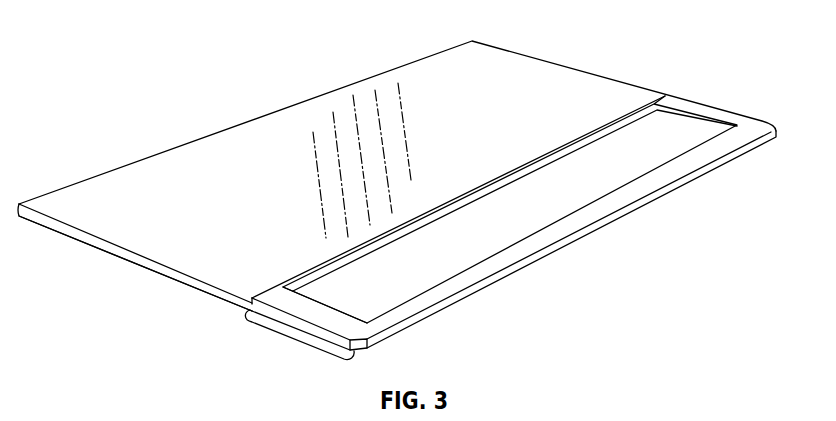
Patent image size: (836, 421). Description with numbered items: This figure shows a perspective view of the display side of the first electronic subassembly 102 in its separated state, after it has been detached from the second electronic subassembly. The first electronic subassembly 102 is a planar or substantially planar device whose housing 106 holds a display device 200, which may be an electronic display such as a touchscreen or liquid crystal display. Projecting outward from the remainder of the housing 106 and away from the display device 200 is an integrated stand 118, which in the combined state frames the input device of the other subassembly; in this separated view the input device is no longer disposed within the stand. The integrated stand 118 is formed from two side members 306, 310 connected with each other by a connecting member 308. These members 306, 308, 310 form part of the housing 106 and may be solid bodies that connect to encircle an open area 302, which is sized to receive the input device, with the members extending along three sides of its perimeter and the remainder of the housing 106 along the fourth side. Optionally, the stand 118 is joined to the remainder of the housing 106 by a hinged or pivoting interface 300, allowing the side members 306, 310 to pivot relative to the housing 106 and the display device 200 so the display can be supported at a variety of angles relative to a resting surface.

The first electronic subassembly 102 is at (136, 59).
The display device 200 is at (72, 197).
The housing 106 is at (77, 238).
The integrated stand 118 is at (290, 338).
The hinged or pivoting interface 300 is at (669, 81).
The open area 302 is at (534, 219).
The side member 306 is at (330, 308).
The connecting member 308 is at (520, 252).
The side member 310 is at (723, 108).